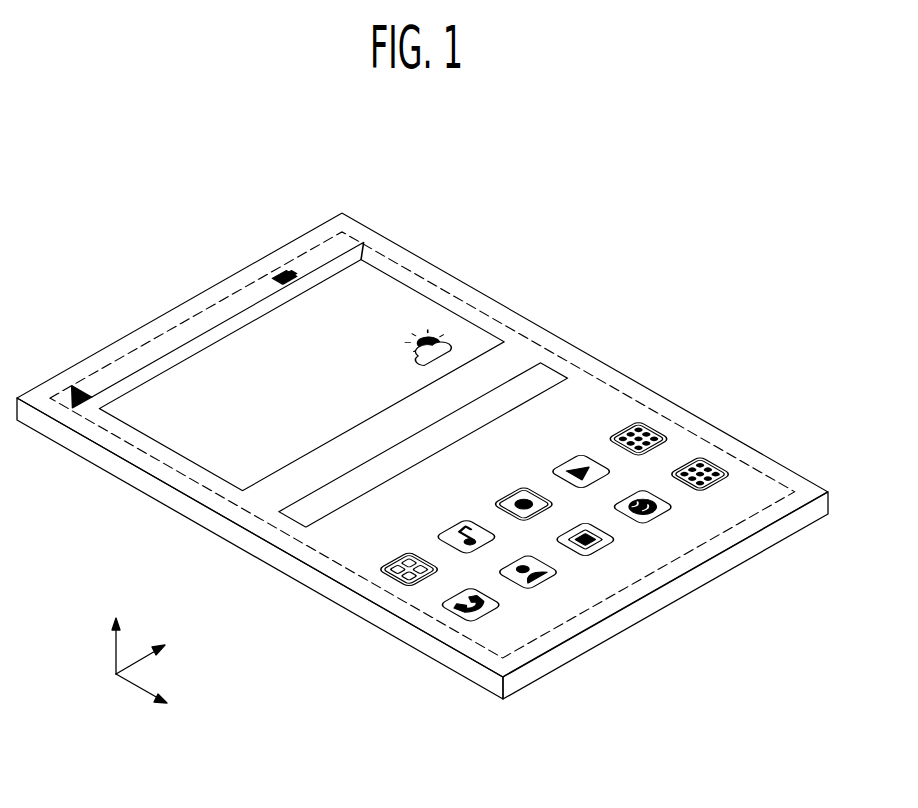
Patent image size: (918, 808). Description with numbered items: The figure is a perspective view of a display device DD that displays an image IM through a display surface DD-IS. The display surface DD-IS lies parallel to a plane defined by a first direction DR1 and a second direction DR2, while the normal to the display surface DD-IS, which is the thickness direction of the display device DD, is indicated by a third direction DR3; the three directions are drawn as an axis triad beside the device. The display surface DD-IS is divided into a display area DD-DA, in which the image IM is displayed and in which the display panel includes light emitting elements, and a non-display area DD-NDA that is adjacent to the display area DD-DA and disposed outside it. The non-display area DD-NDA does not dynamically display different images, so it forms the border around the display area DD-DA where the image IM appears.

The display device DD is at (422, 425).
The display surface DD-IS is at (422, 437).
The display area DD-DA is at (423, 444).
The non-display area DD-NDA is at (422, 445).
The image IM is at (432, 297).
The first direction DR1 is at (159, 699).
The second direction DR2 is at (161, 654).
The third direction DR3 is at (115, 630).